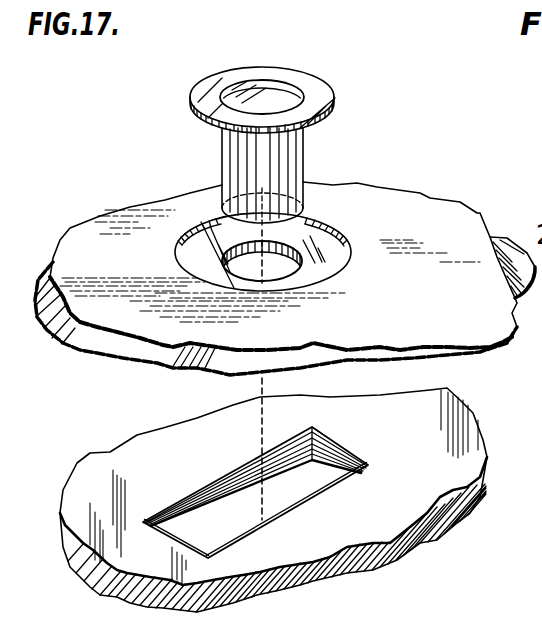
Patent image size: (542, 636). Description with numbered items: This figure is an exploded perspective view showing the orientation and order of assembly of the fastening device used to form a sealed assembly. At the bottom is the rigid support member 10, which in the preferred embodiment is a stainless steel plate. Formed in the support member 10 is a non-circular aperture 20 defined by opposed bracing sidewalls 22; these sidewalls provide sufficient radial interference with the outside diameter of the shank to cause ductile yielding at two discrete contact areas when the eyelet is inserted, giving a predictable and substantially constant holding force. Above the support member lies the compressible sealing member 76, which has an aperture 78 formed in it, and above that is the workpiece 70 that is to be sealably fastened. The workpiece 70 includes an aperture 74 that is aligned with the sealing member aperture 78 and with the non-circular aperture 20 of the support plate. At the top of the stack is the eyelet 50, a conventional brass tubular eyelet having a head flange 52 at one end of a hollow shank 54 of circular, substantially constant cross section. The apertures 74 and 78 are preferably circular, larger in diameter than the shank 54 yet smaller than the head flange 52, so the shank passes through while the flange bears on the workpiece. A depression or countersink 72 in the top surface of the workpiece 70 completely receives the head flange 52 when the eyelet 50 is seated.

The rigid support member 10 is at (477, 450).
The non-circular aperture 20 is at (255, 498).
The opposed bracing sidewalls 22 is at (202, 510).
The eyelet 50 is at (260, 146).
The head flange 52 is at (337, 93).
The hollow shank 54 is at (290, 174).
The workpiece 70 is at (430, 198).
The depression or countersink 72 is at (313, 218).
The workpiece aperture 74 is at (333, 234).
The compressible sealing member 76 is at (510, 237).
The sealing member aperture 78 is at (243, 245).